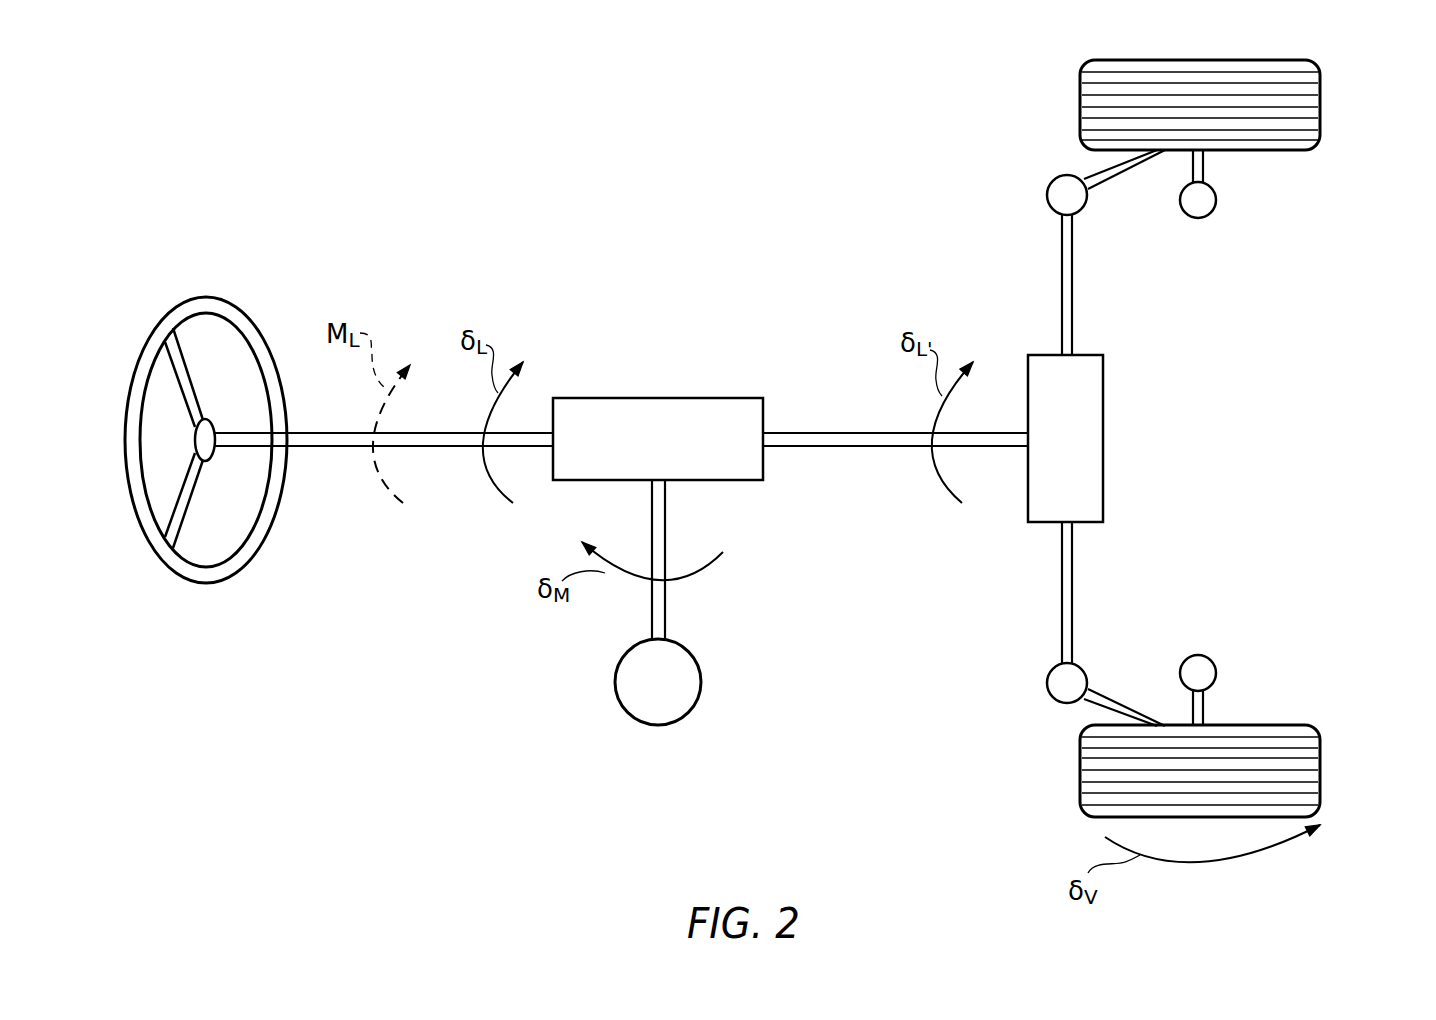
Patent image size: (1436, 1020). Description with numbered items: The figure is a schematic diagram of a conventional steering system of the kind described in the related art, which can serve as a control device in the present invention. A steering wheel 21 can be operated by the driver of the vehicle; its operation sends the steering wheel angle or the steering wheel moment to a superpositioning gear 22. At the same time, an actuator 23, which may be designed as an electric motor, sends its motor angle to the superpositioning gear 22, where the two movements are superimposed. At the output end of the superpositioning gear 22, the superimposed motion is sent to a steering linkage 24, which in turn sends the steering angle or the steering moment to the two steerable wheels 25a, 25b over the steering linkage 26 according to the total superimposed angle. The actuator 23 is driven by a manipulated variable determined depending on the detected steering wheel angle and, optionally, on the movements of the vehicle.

The steering wheel 21 is at (250, 553).
The superpositioning gear 22 is at (790, 439).
The actuator 23 is at (701, 682).
The steering linkage 24 is at (1103, 398).
The steerable wheel 25a is at (1320, 100).
The steerable wheel 25b is at (1320, 757).
The steering linkage 26 is at (1072, 278).